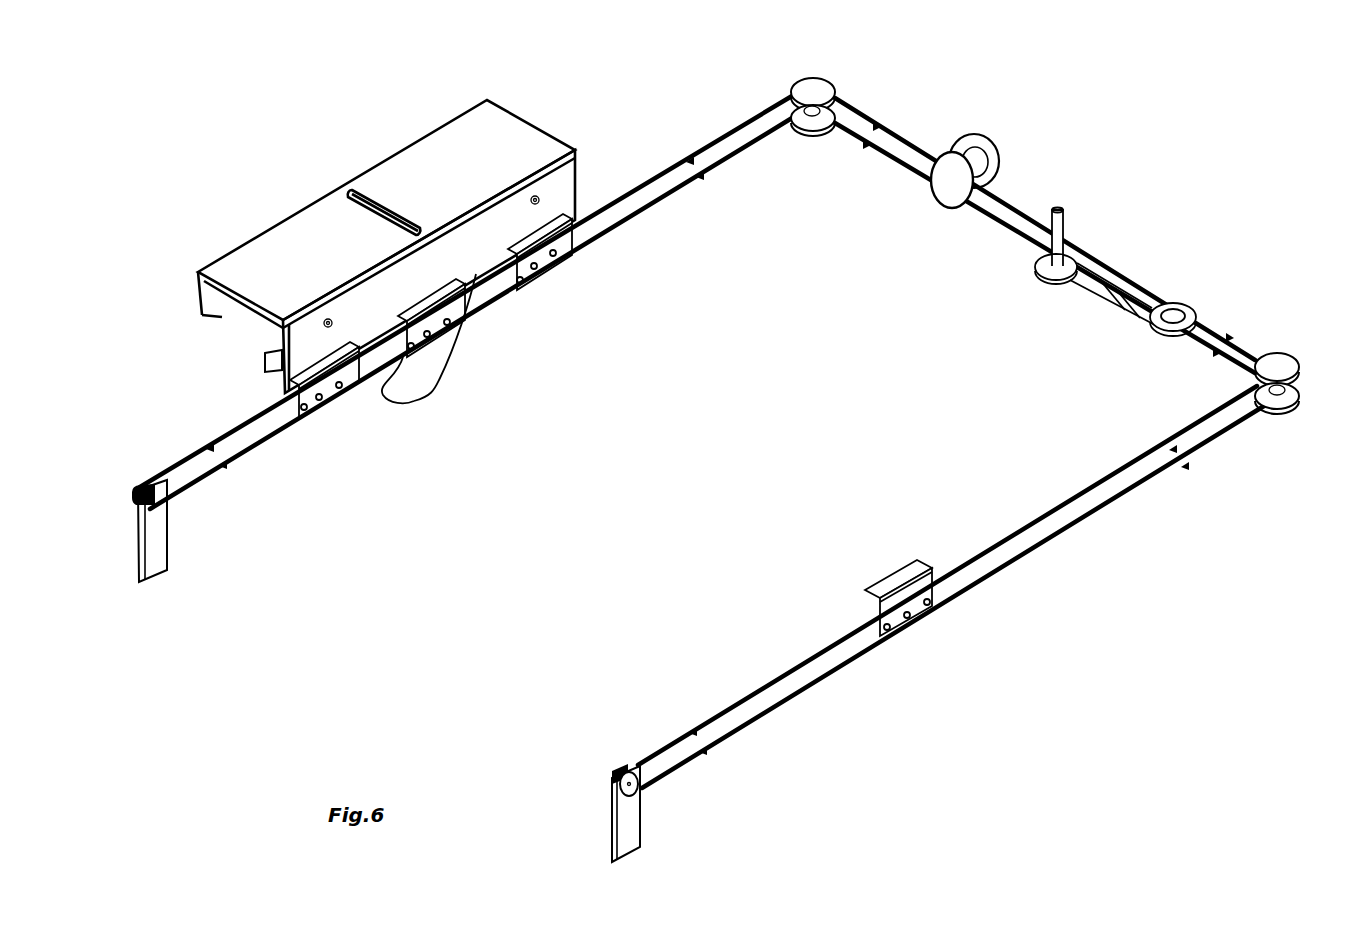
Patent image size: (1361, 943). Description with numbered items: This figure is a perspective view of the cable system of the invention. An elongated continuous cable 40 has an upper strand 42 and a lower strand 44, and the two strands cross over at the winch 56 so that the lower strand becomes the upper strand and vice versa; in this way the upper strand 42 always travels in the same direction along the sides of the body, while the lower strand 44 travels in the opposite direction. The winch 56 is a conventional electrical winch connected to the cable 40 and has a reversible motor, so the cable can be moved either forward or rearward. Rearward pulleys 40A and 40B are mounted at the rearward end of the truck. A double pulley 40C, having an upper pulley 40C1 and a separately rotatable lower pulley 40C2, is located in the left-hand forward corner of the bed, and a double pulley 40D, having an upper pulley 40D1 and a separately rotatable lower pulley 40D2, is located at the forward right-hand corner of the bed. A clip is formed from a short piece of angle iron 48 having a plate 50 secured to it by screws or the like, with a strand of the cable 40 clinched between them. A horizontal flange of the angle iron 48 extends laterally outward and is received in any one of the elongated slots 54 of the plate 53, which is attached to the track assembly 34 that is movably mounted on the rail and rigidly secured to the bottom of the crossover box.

The track assembly 34 is at (262, 212).
The elongated continuous cable 40 is at (702, 438).
The rearward pulley 40A is at (134, 510).
The rearward pulley 40B is at (619, 800).
The double pulley 40C is at (822, 105).
The upper pulley 40C1 is at (808, 78).
The lower pulley 40C2 is at (818, 132).
The double pulley 40D is at (1308, 366).
The upper pulley 40D1 is at (1298, 365).
The lower pulley 40D2 is at (1298, 404).
The upper strand 42 is at (190, 458).
The lower strand 44 is at (204, 474).
The angle iron 48 is at (538, 282).
The plate 50 is at (306, 405).
The plate 53 is at (272, 368).
The elongated slots 54 is at (422, 400).
The winch 56 is at (987, 130).